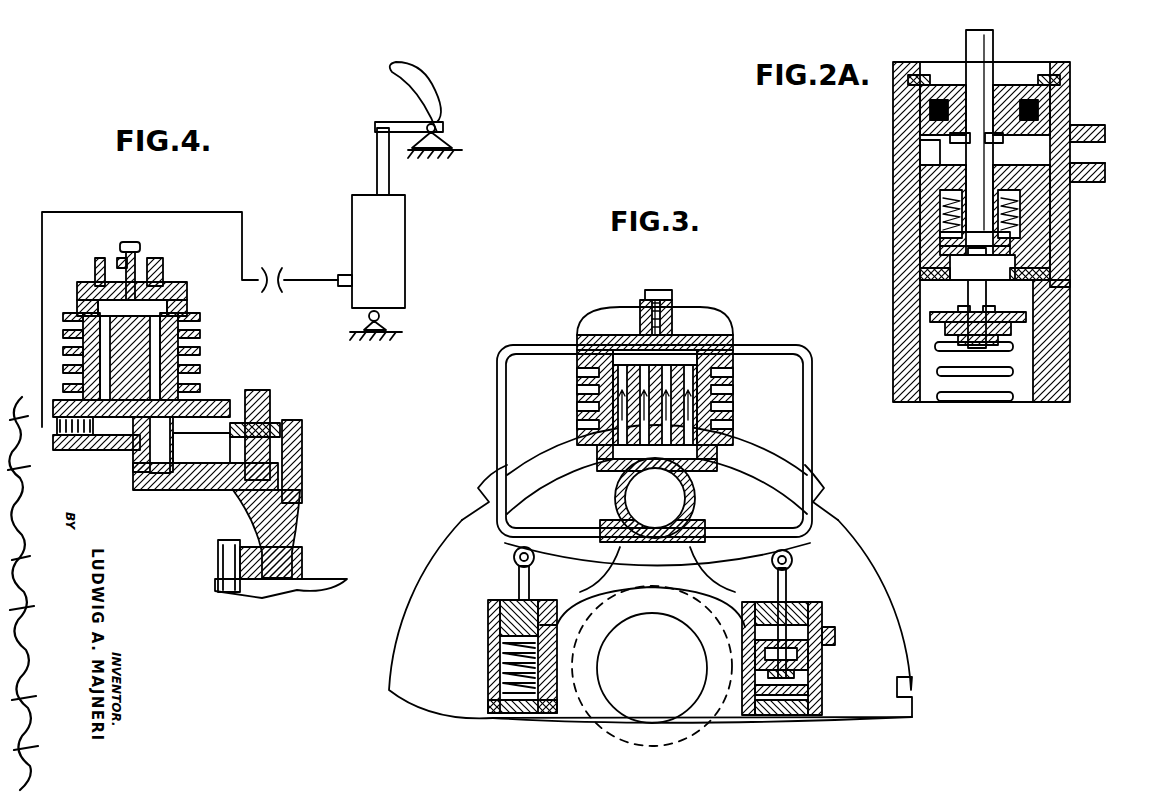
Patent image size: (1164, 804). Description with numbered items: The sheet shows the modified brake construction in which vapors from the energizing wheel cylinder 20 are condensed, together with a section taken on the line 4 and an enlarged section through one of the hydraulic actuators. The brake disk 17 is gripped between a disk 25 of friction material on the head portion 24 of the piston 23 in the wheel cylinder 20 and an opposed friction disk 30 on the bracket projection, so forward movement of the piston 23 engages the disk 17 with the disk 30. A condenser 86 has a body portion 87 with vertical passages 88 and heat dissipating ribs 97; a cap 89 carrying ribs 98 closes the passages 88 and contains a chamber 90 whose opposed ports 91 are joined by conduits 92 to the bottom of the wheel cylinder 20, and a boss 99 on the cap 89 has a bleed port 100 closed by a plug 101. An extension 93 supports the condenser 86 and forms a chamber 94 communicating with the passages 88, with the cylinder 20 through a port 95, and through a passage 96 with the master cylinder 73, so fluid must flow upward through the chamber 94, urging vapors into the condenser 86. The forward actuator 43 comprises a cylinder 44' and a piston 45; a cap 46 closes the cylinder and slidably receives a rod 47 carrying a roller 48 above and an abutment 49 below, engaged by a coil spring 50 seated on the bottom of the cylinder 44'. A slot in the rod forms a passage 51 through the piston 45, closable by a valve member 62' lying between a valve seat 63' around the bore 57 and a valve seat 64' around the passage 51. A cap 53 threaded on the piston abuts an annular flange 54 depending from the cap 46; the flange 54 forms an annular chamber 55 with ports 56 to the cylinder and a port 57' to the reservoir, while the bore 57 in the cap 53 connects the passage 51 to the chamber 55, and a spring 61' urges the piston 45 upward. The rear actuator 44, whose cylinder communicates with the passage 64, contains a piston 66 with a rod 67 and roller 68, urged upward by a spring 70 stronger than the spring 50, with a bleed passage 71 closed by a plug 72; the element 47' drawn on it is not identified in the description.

In FIG. 3, the section line 4 is at (654, 286).
In FIG. 4, the disk 17 is at (302, 459).
In FIG. 3, the wheel cylinder 20 is at (697, 503).
In FIG. 4, the piston 23 is at (172, 488).
In FIG. 4, the head portion 24 is at (232, 444).
In FIG. 4, the disk of friction material 25 is at (265, 418).
In FIG. 4, the disk of friction material 30 is at (290, 440).
In FIG. 2A, the forward actuator 43 is at (1086, 287).
In FIG. 3, the rear actuator 44 is at (500, 656).
In FIG. 2A, the cylinder 44' is at (997, 232).
In FIG. 2A, the piston 45 is at (1053, 222).
In FIG. 3, the cap 46 is at (797, 604).
In FIG. 2A, the cap 46 is at (1003, 90).
In FIG. 3, the rod 47 is at (763, 623).
In FIG. 2A, the rod 47 is at (950, 189).
In FIG. 3, the side plug 47' is at (848, 637).
In FIG. 3, the roller 48 is at (796, 562).
In FIG. 3, the abutment 49 is at (803, 714).
In FIG. 2A, the abutment 49 is at (1005, 312).
In FIG. 2A, the coil spring 50 is at (997, 373).
In FIG. 3, the passage 51 is at (820, 697).
In FIG. 2A, the passage 51 is at (1040, 282).
In FIG. 2A, the cap 53 is at (1045, 97).
In FIG. 2A, the annular flange 54 is at (925, 145).
In FIG. 2A, the annular chamber 55 is at (928, 157).
In FIG. 2A, the ports 56 is at (1080, 138).
In FIG. 2A, the vertical bore 57 is at (936, 214).
In FIG. 2A, the port 57' is at (1103, 154).
In FIG. 2A, the spring 61' is at (1080, 195).
In FIG. 3, the valve member 62' is at (811, 678).
In FIG. 2A, the valve member 62' is at (1023, 238).
In FIG. 2A, the valve seat 63' is at (930, 251).
In FIG. 3, the passage 64 is at (701, 747).
In FIG. 2A, the valve seat 64' is at (883, 297).
In FIG. 3, the piston 66 is at (533, 607).
In FIG. 3, the rod 67 is at (519, 578).
In FIG. 3, the roller 68 is at (513, 556).
In FIG. 3, the spring 70 is at (498, 714).
In FIG. 3, the bleed passage 71 is at (513, 643).
In FIG. 3, the plug 72 is at (508, 600).
In FIG. 4, the master cylinder 73 is at (406, 245).
In FIG. 4, the condenser 86 is at (207, 314).
In FIG. 3, the condenser 86 is at (751, 346).
In FIG. 4, the body portion 87 is at (182, 355).
In FIG. 3, the body portion 87 is at (590, 403).
In FIG. 4, the vertical passages 88 is at (153, 345).
In FIG. 3, the vertical passages 88 is at (655, 405).
In FIG. 4, the cap 89 is at (78, 300).
In FIG. 4, the chamber 90 is at (152, 308).
In FIG. 3, the chamber 90 is at (633, 352).
In FIG. 4, the ports 91 is at (122, 303).
In FIG. 3, the ports 91 is at (585, 332).
In FIG. 3, the conduits 92 is at (498, 430).
In FIG. 4, the extension 93 is at (107, 455).
In FIG. 4, the chamber 94 is at (167, 393).
In FIG. 3, the chamber 94 is at (630, 462).
In FIG. 4, the port 95 is at (188, 403).
In FIG. 3, the port 95 is at (692, 474).
In FIG. 4, the passage 96 is at (87, 453).
In FIG. 4, the heat dissipating ribs 97 is at (200, 373).
In FIG. 3, the heat dissipating ribs 97 is at (728, 407).
In FIG. 4, the heat dissipating ribs 98 is at (160, 266).
In FIG. 4, the boss 99 is at (155, 260).
In FIG. 3, the boss 99 is at (673, 308).
In FIG. 4, the bleed port 100 is at (160, 270).
In FIG. 3, the bleed port 100 is at (682, 333).
In FIG. 4, the plug 101 is at (127, 292).
In FIG. 3, the plug 101 is at (670, 293).